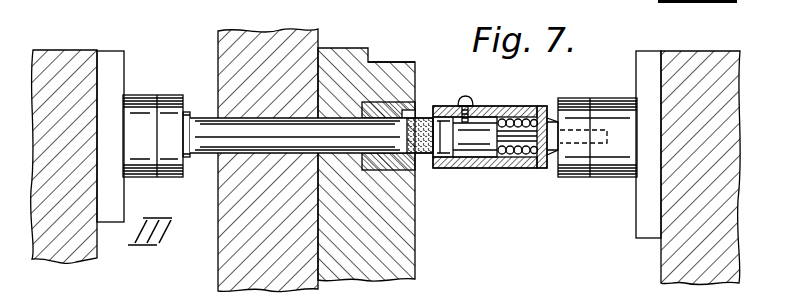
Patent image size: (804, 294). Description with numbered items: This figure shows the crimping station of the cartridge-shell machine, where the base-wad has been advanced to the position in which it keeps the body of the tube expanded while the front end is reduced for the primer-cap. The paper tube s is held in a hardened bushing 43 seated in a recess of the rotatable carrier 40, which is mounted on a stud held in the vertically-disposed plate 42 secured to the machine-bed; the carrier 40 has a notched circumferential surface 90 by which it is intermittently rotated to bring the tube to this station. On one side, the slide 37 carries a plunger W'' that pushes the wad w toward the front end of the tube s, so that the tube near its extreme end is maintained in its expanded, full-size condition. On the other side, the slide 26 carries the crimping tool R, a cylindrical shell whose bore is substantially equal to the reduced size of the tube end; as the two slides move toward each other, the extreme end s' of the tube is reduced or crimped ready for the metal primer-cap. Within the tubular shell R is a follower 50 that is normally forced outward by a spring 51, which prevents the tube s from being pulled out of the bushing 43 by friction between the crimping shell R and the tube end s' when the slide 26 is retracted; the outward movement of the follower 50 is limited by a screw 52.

The slide 37 is at (75, 57).
The plunger W'' is at (163, 116).
The plate 42 is at (260, 47).
The notched circumferential surface 90 is at (342, 53).
The hardened bushing 43 is at (405, 62).
The carrier 40 is at (382, 110).
The tube s is at (420, 167).
The follower 50 is at (480, 168).
The extreme end of the tube s' is at (465, 168).
The spring 51 is at (515, 157).
The screw 52 is at (465, 96).
The crimping tool R is at (505, 106).
The wad w is at (423, 117).
The slide 26 is at (705, 58).